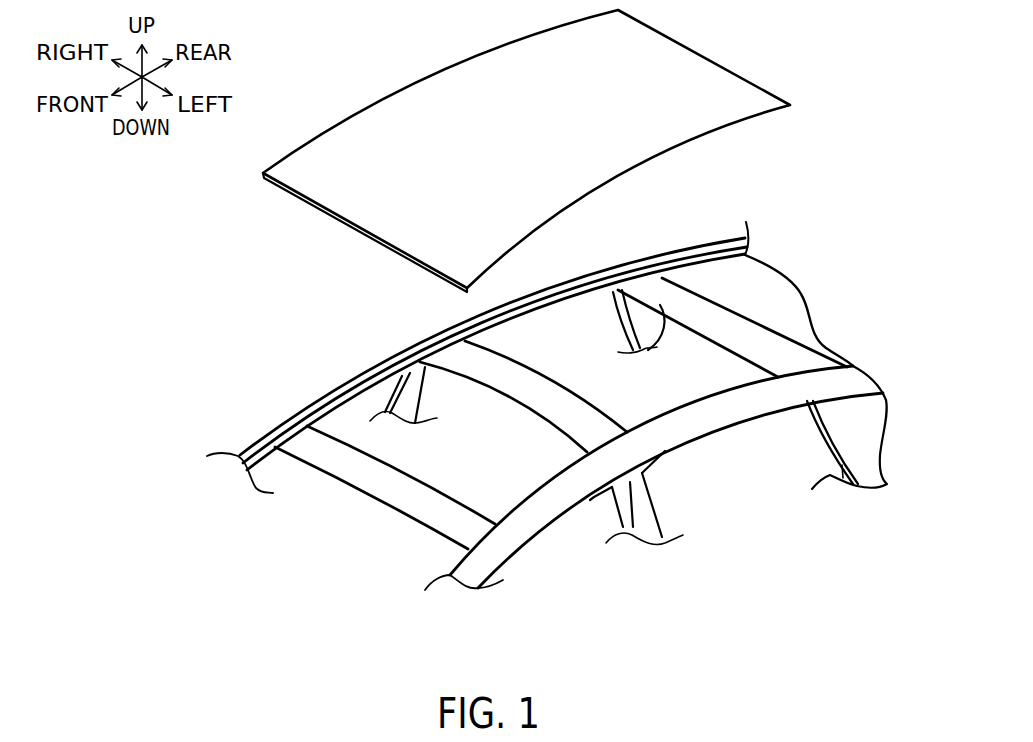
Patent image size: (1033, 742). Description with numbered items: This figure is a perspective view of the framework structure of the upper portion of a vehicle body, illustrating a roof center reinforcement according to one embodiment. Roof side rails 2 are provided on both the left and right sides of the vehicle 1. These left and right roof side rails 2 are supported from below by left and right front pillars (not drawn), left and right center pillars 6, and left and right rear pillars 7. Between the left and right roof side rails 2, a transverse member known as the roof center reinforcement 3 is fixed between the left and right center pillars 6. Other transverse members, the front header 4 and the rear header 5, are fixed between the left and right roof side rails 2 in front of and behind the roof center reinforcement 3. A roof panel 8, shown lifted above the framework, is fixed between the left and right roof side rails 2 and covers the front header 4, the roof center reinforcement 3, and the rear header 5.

The vehicle 1 is at (321, 363).
The roof side rail 2 is at (570, 284).
The roof center reinforcement 3 is at (528, 383).
The front header 4 is at (378, 490).
The rear header 5 is at (745, 322).
The center pillar 6 is at (420, 393).
The rear pillar 7 is at (644, 316).
The roof panel 8 is at (467, 83).